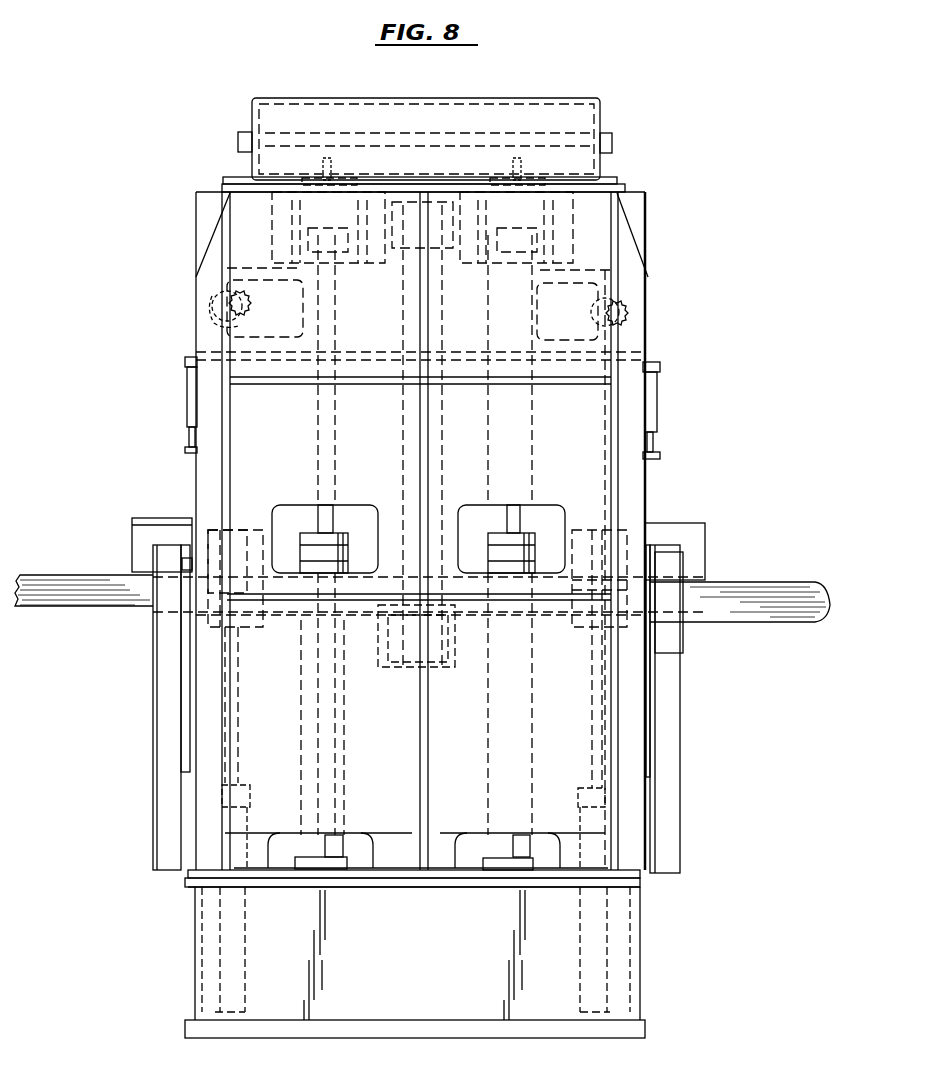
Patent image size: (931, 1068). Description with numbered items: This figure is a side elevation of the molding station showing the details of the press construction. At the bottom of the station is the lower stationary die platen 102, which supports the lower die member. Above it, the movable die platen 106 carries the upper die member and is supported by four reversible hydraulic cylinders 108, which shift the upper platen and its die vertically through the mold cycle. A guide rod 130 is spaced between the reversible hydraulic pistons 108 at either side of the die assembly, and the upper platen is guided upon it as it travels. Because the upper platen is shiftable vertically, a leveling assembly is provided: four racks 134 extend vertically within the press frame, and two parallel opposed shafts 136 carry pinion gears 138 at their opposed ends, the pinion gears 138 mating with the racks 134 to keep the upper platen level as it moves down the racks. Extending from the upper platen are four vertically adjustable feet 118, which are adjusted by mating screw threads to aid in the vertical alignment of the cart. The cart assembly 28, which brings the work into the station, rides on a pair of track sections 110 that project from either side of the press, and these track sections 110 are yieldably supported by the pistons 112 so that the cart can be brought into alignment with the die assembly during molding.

The cart assembly 28 is at (683, 533).
The lower stationary die platen 102 is at (440, 966).
The movable die platen 106 is at (218, 328).
The reversible hydraulic cylinders 108 is at (332, 758).
The track sections 110 is at (747, 593).
The pistons 112 is at (583, 817).
The vertically adjustable feet 118 is at (190, 403).
The guide rod 130 is at (437, 498).
The racks 134 is at (192, 340).
The opposed shafts 136 is at (225, 312).
The pinion gears 138 is at (222, 268).